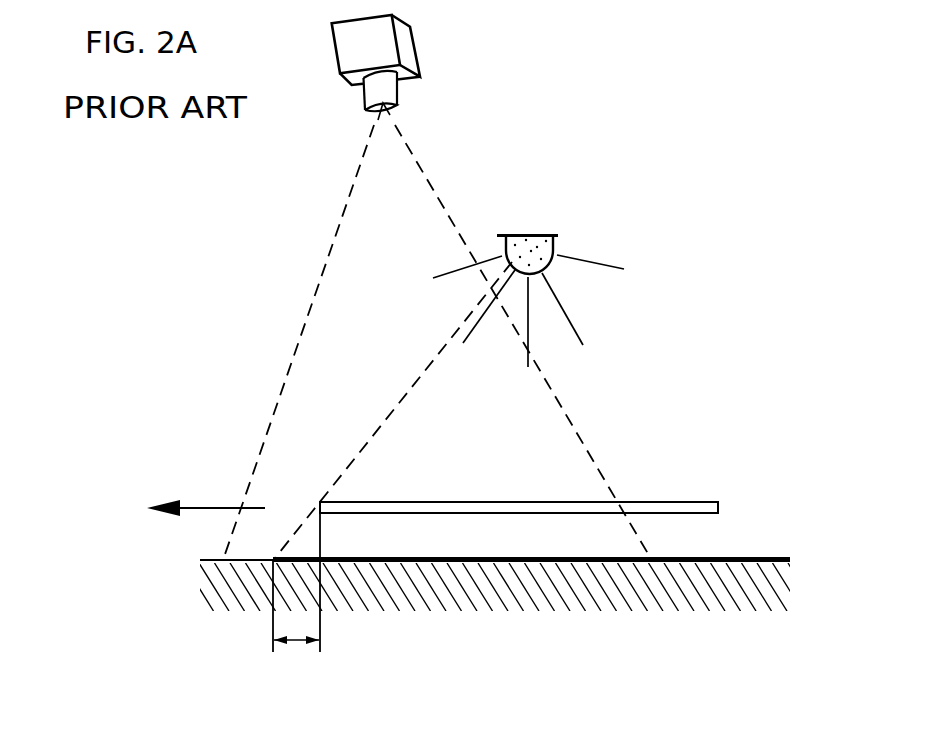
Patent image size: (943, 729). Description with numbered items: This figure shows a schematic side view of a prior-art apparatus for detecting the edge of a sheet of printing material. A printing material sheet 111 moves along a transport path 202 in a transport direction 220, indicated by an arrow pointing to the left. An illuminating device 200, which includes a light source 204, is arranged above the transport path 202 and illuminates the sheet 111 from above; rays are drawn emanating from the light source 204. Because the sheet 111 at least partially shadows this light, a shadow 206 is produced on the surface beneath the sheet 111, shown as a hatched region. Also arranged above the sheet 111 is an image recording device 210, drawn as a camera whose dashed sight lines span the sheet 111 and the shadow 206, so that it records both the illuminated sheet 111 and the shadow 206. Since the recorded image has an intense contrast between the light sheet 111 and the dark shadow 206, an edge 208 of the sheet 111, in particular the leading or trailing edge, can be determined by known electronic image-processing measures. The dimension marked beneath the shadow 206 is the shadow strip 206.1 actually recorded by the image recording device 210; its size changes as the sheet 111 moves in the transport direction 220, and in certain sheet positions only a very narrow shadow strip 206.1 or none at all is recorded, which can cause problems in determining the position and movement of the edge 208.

The image recording device 210 is at (383, 46).
The illuminating device 200 is at (556, 191).
The light source 204 is at (535, 240).
The transport path 202 is at (682, 440).
The printing material sheet 111 is at (695, 507).
The shadow 206 is at (765, 557).
The shadow strip 206.1 is at (296, 642).
The edge 208 is at (318, 502).
The transport direction 220 is at (221, 507).